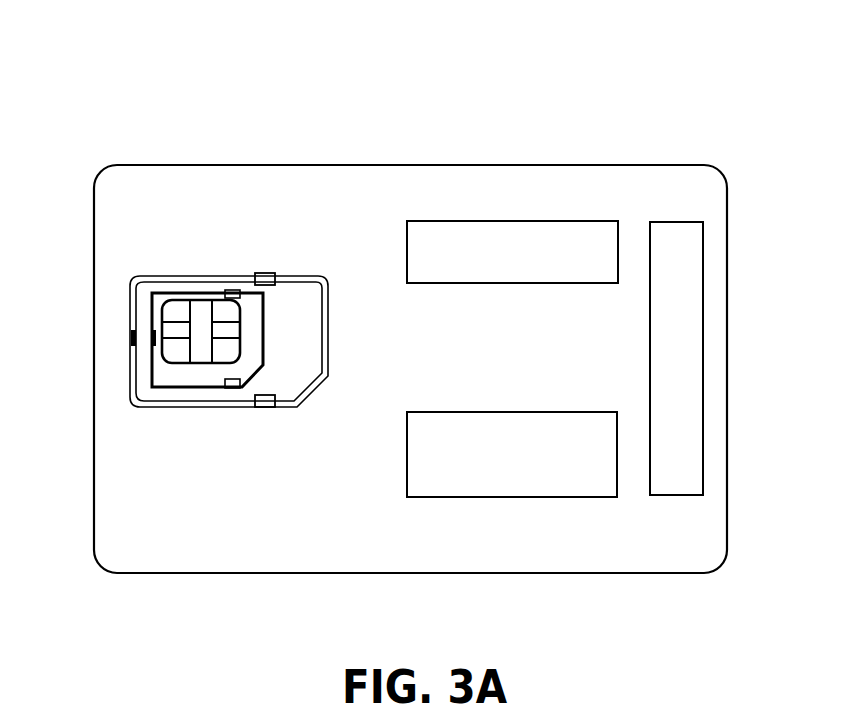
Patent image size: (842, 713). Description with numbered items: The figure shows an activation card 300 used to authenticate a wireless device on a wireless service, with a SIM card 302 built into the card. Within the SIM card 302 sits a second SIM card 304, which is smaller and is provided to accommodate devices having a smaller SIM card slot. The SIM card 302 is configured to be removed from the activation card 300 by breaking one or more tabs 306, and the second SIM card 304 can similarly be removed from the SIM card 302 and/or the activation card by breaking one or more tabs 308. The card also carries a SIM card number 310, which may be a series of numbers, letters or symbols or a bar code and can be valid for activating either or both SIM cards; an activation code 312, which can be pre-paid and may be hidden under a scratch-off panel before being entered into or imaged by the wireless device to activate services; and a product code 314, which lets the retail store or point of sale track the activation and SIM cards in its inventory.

The activation card 300 is at (398, 62).
The SIM card 302 is at (295, 320).
The second SIM card 304 is at (205, 337).
The tabs 306 is at (265, 273).
The tabs 308 is at (233, 290).
The SIM card number 310 is at (546, 221).
The activation code 312 is at (517, 497).
The product code 314 is at (703, 280).